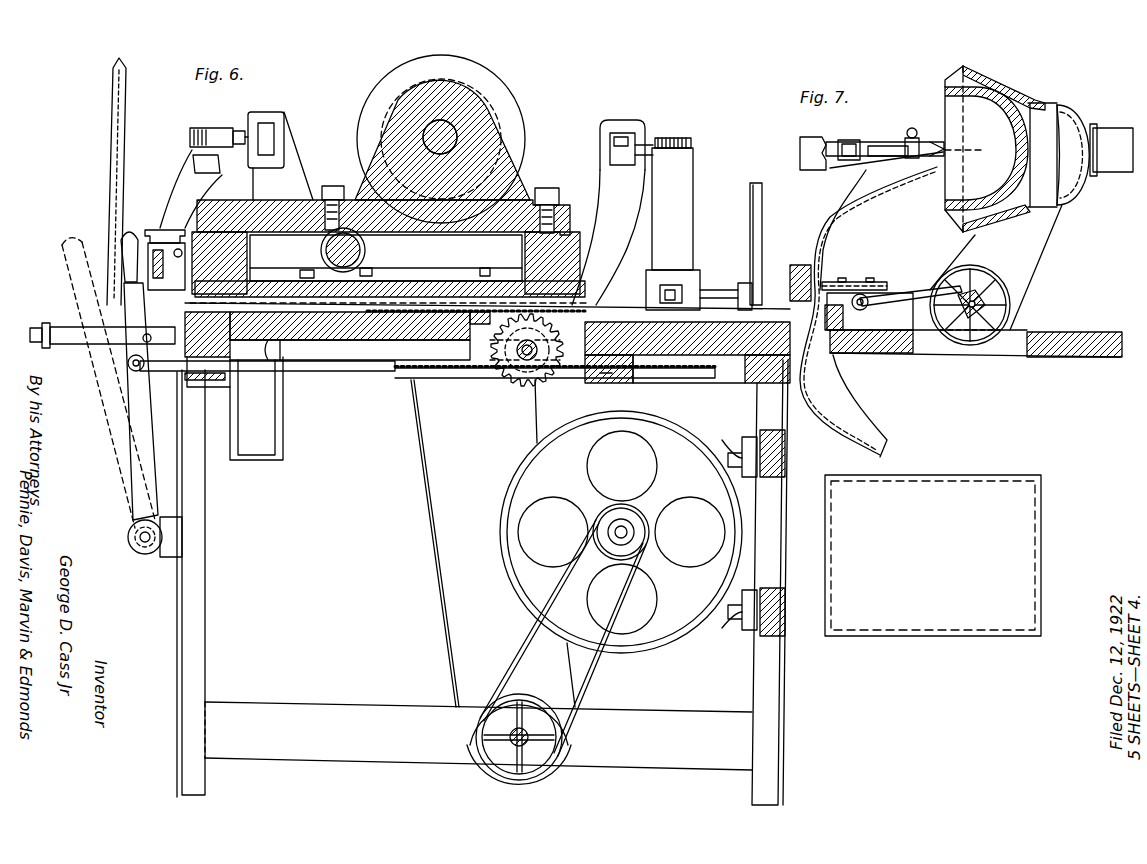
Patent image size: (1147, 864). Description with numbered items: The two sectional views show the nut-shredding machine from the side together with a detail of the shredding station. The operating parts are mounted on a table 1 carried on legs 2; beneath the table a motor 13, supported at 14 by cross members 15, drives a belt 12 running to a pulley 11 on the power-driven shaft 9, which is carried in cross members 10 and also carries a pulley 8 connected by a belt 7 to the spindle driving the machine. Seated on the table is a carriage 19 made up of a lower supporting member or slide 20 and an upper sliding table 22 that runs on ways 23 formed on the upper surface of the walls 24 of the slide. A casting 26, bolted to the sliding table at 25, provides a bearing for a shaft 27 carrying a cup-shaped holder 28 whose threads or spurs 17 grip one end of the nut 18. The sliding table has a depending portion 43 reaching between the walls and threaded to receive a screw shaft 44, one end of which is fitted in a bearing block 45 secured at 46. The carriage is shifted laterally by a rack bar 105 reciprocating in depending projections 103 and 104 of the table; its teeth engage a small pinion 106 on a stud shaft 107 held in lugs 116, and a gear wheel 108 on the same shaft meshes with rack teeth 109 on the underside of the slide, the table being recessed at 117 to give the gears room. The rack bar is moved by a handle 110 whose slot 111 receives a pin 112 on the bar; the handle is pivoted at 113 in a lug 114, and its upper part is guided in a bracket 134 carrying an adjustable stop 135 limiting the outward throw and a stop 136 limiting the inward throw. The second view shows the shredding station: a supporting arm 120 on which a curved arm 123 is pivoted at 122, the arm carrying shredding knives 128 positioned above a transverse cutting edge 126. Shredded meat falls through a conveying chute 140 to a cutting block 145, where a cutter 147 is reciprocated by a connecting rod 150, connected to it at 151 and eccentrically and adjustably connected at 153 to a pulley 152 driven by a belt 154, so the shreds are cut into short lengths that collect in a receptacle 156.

In FIG. 6, the table 1 is at (347, 343).
In FIG. 7, the table 1 is at (1068, 336).
In FIG. 6, the legs 2 is at (205, 575).
In FIG. 6, the belt 7 is at (434, 556).
In FIG. 6, the pulley 8 is at (488, 693).
In FIG. 6, the power-driven shaft 9 is at (560, 765).
In FIG. 6, the cross members 10 is at (625, 715).
In FIG. 6, the pulley 11 is at (527, 702).
In FIG. 6, the belt 12 is at (598, 672).
In FIG. 6, the motor 13 is at (688, 438).
In FIG. 6, the motor support 14 is at (741, 444).
In FIG. 6, the cross members 15 is at (785, 450).
In FIG. 7, the threads or spurs 17 is at (1000, 90).
In FIG. 7, the nut 18 is at (944, 86).
In FIG. 6, the carriage 19 is at (594, 234).
In FIG. 6, the lower supporting member or slide 20 is at (450, 288).
In FIG. 6, the upper sliding table 22 is at (295, 203).
In FIG. 6, the ways 23 is at (222, 225).
In FIG. 6, the walls 24 is at (248, 246).
In FIG. 6, the bolting point 25 is at (335, 186).
In FIG. 6, the casting 26 is at (493, 133).
In FIG. 6, the shaft 27 is at (450, 127).
In FIG. 7, the shaft 27 is at (1115, 160).
In FIG. 6, the holder 28 is at (505, 103).
In FIG. 6, the depending portion 43 is at (372, 258).
In FIG. 6, the worm or screw shaft 44 is at (372, 268).
In FIG. 6, the bearing block 45 is at (300, 275).
In FIG. 6, the securing point 46 is at (310, 272).
In FIG. 6, the depending projection 103 is at (232, 390).
In FIG. 6, the depending projection 104 is at (625, 380).
In FIG. 6, the rack bar 105 is at (393, 345).
In FIG. 6, the small pinion 106 is at (553, 367).
In FIG. 6, the stud shaft 107 is at (582, 305).
In FIG. 6, the gear wheel 108 is at (507, 333).
In FIG. 6, the rack teeth 109 is at (582, 305).
In FIG. 6, the handle 110 is at (135, 403).
In FIG. 6, the slot 111 is at (140, 372).
In FIG. 6, the pin 112 is at (150, 370).
In FIG. 6, the pivot 113 is at (143, 540).
In FIG. 6, the lug 114 is at (165, 552).
In FIG. 6, the lugs 116 is at (527, 362).
In FIG. 6, the recess 117 is at (503, 343).
In FIG. 7, the supporting arm 120 is at (808, 140).
In FIG. 7, the pivot 122 is at (848, 142).
In FIG. 7, the curved arm 123 is at (870, 148).
In FIG. 7, the cutting edge 126 is at (980, 149).
In FIG. 7, the shredding knives 128 is at (940, 150).
In FIG. 6, the bracket 134 is at (62, 328).
In FIG. 6, the adjustable stop 135 is at (50, 340).
In FIG. 6, the stop 136 is at (150, 334).
In FIG. 6, the conveying chute 140 is at (192, 149).
In FIG. 7, the cutting block 145 is at (796, 265).
In FIG. 7, the cutter 147 is at (856, 282).
In FIG. 7, the connecting rod 150 is at (905, 295).
In FIG. 7, the connection 151 is at (882, 308).
In FIG. 6, the pulley 152 is at (118, 243).
In FIG. 7, the pulley 152 is at (996, 290).
In FIG. 7, the adjusting means 153 is at (975, 300).
In FIG. 7, the belt 154 is at (822, 212).
In FIG. 6, the receptacle 156 is at (933, 555).